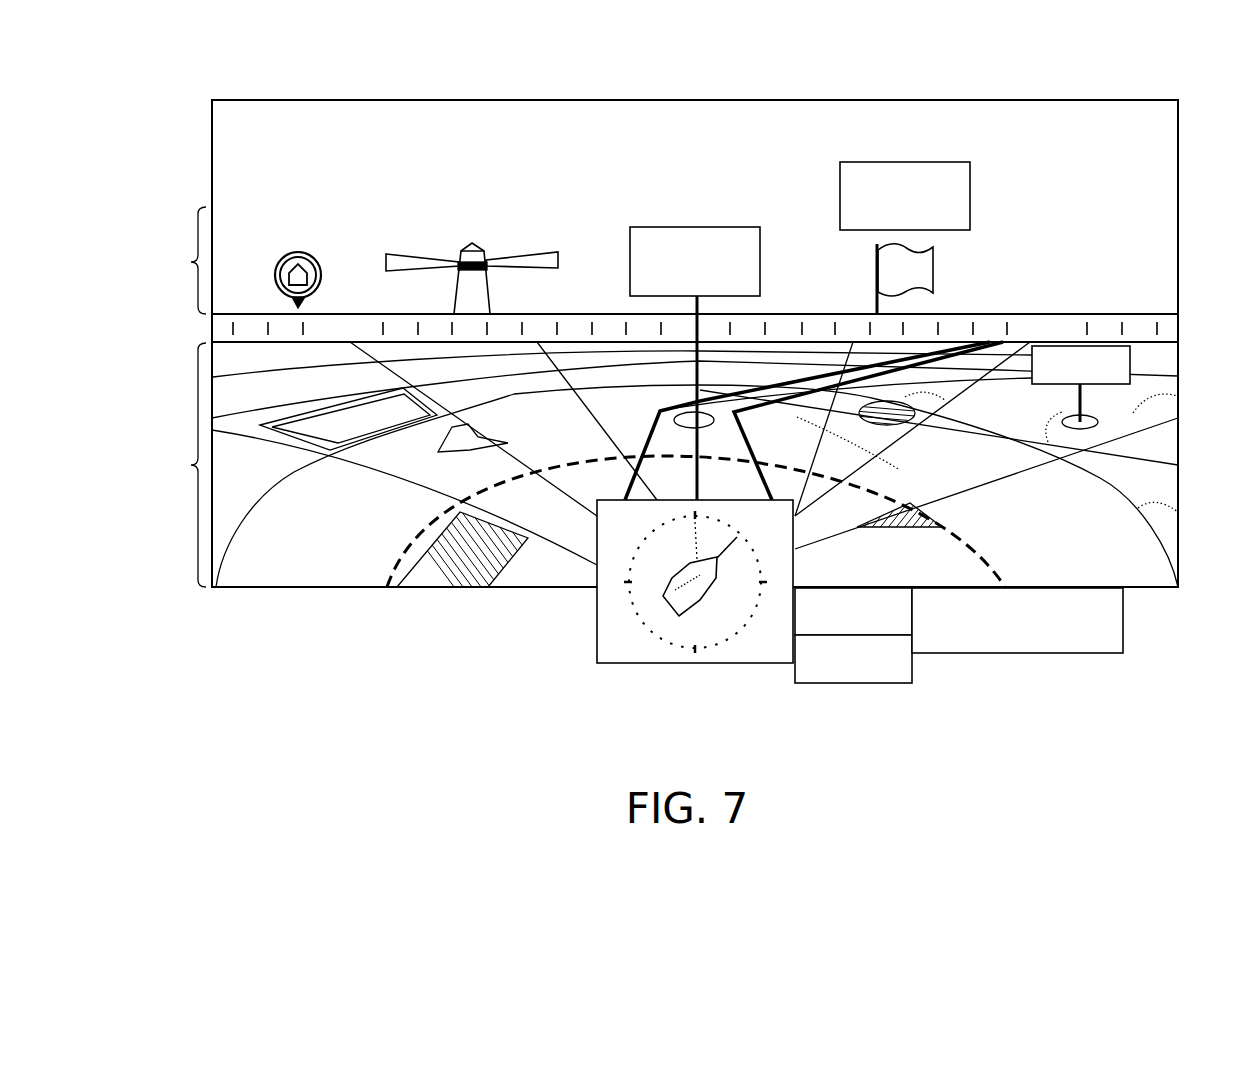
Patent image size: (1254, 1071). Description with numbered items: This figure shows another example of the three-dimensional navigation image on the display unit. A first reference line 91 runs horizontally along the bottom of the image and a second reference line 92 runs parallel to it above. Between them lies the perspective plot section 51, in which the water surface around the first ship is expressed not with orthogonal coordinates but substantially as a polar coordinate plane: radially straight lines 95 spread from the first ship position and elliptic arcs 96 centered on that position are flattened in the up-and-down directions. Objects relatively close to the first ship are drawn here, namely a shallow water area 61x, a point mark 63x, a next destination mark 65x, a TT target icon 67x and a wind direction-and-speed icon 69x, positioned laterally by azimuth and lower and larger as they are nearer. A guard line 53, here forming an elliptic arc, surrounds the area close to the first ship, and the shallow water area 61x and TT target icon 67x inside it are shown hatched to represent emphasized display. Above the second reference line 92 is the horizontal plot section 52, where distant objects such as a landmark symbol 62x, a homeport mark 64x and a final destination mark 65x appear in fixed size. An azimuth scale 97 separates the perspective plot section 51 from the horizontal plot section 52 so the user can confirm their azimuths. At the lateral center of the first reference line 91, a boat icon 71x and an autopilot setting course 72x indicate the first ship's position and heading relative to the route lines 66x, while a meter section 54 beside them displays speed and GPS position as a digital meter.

The perspective plot section 51 is at (684, 537).
The horizontal plot section 52 is at (584, 331).
The guard line 53 is at (385, 556).
The meter section 54 is at (929, 670).
The shallow water area 61x is at (288, 440).
The landmark symbol 62x is at (460, 300).
The point mark 63x is at (1068, 432).
The homeport mark 64x is at (276, 288).
The destination mark 65x is at (933, 272).
The route lines 66x is at (788, 378).
The TT target icon 67x is at (440, 458).
The wind direction-and-speed icon 69x is at (918, 410).
The boat icon 71x is at (698, 606).
The setting course 72x is at (736, 545).
The first reference line 91 is at (1160, 588).
The second reference line 92 is at (1135, 334).
The radially straight lines 95 is at (885, 460).
The elliptic arcs 96 is at (1162, 398).
The azimuth scale 97 is at (597, 313).